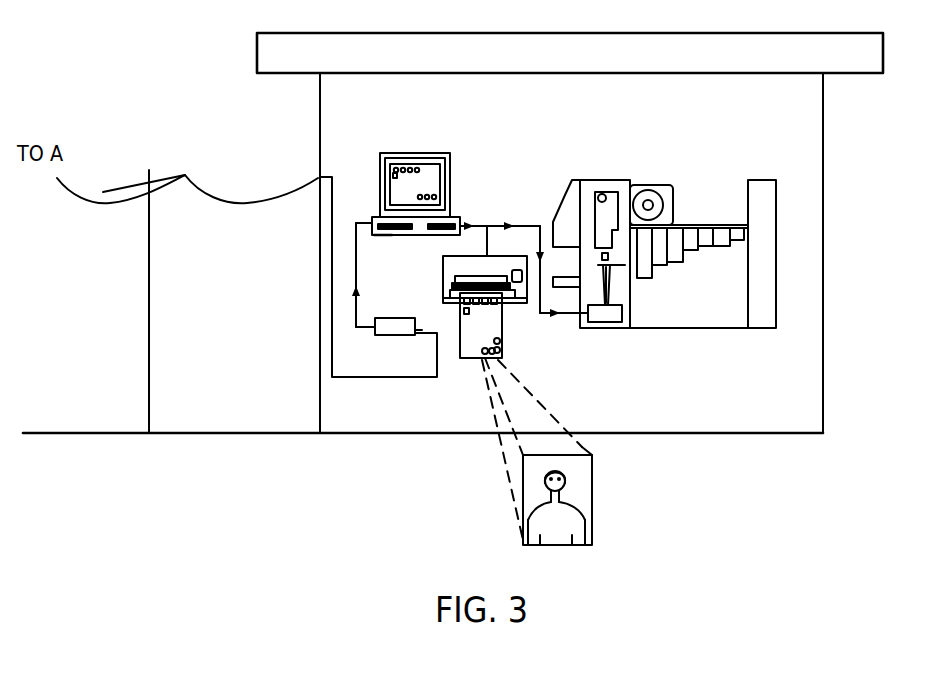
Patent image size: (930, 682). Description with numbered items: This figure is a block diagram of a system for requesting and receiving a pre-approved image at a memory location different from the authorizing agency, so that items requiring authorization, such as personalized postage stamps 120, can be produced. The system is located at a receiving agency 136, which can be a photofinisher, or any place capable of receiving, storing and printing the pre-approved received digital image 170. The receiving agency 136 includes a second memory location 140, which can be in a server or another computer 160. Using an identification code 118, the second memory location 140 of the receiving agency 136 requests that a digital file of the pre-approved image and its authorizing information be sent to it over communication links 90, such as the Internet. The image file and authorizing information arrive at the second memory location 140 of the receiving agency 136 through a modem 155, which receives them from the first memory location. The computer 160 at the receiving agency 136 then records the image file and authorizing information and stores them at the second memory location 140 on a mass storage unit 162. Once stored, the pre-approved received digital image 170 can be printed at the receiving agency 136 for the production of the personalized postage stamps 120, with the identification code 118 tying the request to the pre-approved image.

The communication links 90 is at (80, 193).
The receiving agency 136 is at (826, 429).
The second memory location 140 is at (377, 220).
The computer 160 is at (374, 221).
The mass storage unit 162 is at (384, 236).
The modem 155 is at (356, 325).
The personalized postage stamps 120 is at (468, 353).
The pre-approved received digital image 170 is at (583, 488).
The identification code 118 is at (577, 528).